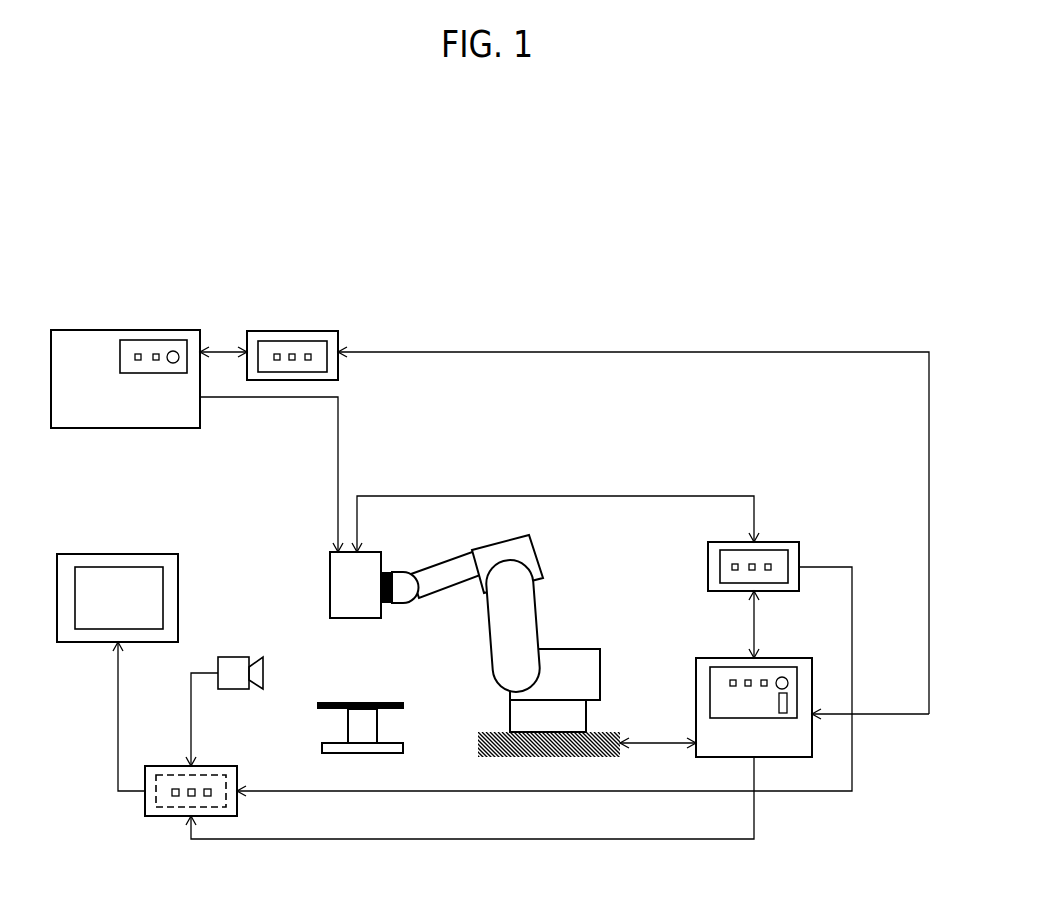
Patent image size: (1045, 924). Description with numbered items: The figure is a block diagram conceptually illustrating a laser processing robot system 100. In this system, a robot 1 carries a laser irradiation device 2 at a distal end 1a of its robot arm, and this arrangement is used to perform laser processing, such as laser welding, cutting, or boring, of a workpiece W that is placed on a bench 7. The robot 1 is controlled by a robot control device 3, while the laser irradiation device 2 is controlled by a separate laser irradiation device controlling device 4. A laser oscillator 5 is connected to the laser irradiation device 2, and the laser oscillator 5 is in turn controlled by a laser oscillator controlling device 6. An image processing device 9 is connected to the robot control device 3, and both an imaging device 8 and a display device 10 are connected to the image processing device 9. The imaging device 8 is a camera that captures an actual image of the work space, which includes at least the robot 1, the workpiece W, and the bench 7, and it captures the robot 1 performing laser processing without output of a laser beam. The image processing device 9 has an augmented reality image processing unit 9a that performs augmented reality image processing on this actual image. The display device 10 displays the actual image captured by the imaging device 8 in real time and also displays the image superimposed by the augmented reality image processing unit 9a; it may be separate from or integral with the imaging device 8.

The laser processing robot system 100 is at (846, 234).
The robot 1 is at (540, 620).
The distal end 1a is at (393, 583).
The laser irradiation device 2 is at (330, 578).
The robot control device 3 is at (700, 658).
The laser irradiation device controlling device 4 is at (787, 542).
The laser oscillator 5 is at (79, 330).
The laser oscillator controlling device 6 is at (292, 331).
The bench 7 is at (343, 723).
The imaging device 8 is at (232, 657).
The image processing device 9 is at (162, 766).
The augmented reality image processing unit 9a is at (168, 808).
The display device 10 is at (95, 554).
The workpiece W is at (398, 702).